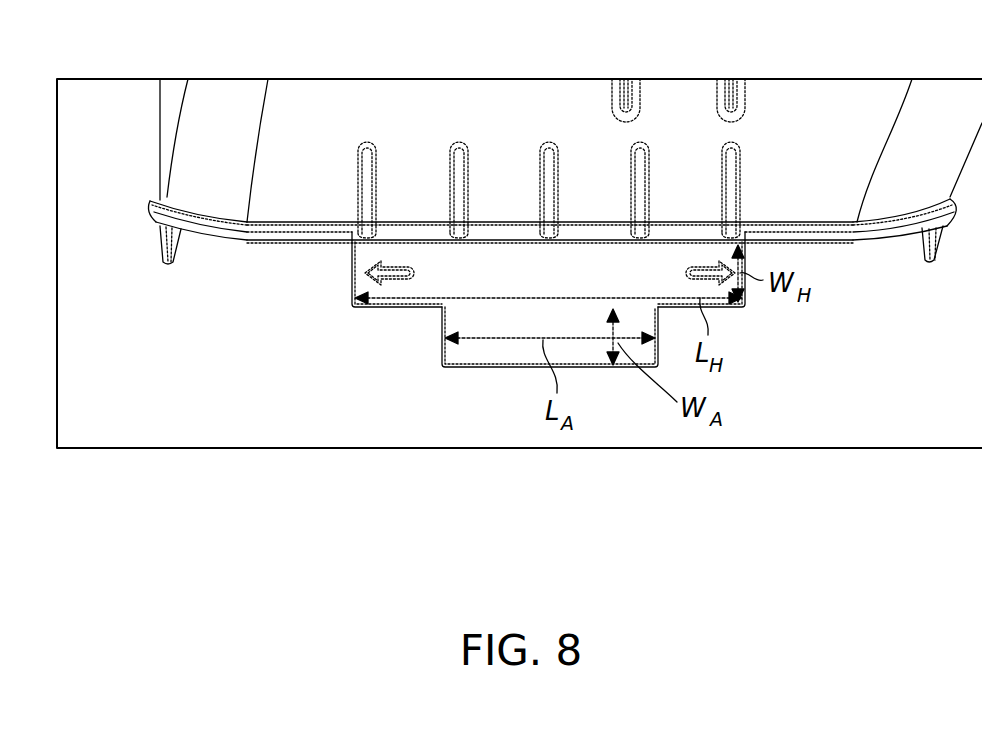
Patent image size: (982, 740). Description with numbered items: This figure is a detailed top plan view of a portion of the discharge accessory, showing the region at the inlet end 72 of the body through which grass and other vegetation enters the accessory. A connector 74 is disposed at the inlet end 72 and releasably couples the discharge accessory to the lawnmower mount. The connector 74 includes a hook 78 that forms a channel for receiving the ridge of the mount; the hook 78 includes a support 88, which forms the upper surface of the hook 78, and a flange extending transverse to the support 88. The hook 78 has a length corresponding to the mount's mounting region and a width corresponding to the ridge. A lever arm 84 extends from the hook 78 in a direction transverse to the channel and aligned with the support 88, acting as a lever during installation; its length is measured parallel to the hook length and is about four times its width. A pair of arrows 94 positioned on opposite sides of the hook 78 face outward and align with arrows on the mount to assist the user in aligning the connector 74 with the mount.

The inlet end 72 is at (858, 258).
The connector 74 is at (370, 371).
The hook 78 is at (332, 299).
The lever arm 84 is at (492, 352).
The support 88 is at (440, 273).
The arrows 94 is at (392, 262).